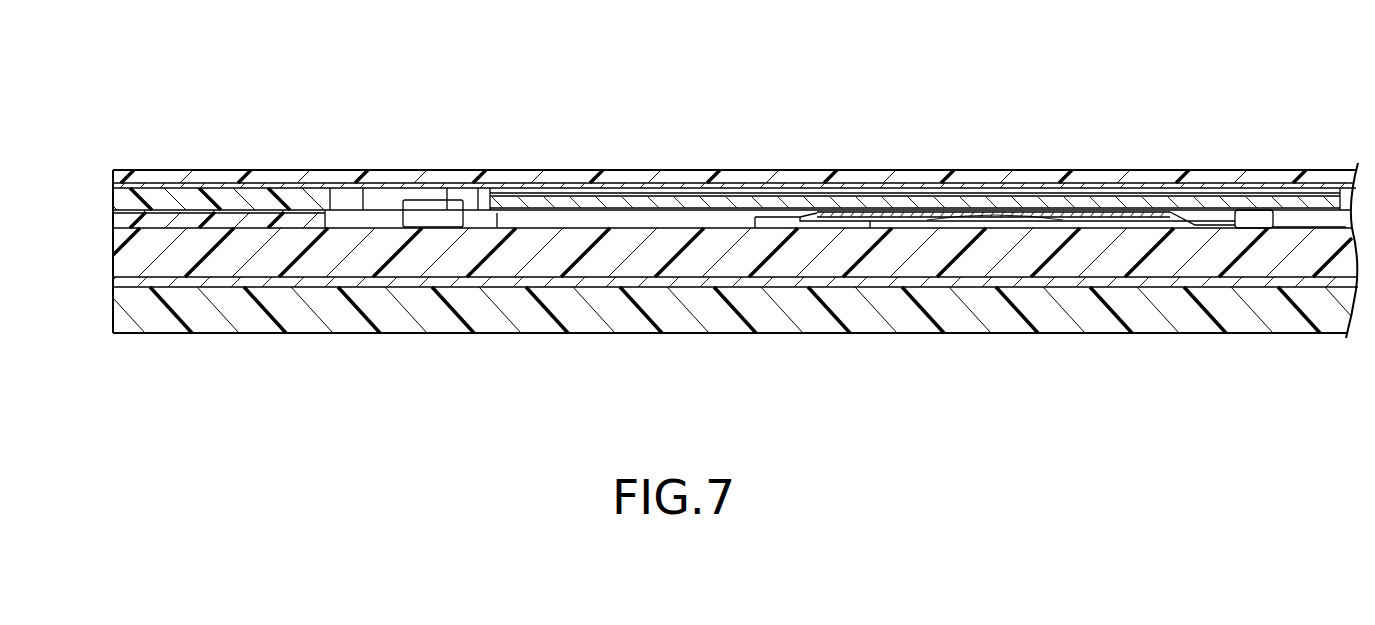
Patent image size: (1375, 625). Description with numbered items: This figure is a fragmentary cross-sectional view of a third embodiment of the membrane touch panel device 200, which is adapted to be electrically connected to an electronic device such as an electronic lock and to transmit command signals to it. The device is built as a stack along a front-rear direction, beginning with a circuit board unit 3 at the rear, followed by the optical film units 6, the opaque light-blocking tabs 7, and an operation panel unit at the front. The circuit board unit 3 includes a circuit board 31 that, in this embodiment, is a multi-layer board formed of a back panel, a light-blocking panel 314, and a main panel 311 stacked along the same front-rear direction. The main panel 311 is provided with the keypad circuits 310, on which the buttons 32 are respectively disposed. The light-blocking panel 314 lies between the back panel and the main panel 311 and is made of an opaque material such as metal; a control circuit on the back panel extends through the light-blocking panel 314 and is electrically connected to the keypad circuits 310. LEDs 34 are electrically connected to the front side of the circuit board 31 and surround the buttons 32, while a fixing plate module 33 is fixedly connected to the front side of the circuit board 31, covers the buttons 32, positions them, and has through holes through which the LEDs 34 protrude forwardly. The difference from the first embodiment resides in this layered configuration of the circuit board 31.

The membrane touch panel device 200 is at (131, 146).
The opaque light-blocking tabs 7 is at (398, 188).
The optical film units 6 is at (526, 188).
The buttons 32 is at (891, 215).
The circuit board unit 3 is at (149, 345).
The circuit board 31 is at (249, 336).
The fixing plate module 33 is at (305, 218).
The LEDs 34 is at (430, 215).
The main panel 311 is at (555, 250).
The light-blocking panel 314 is at (645, 282).
The keypad circuits 310 is at (891, 228).